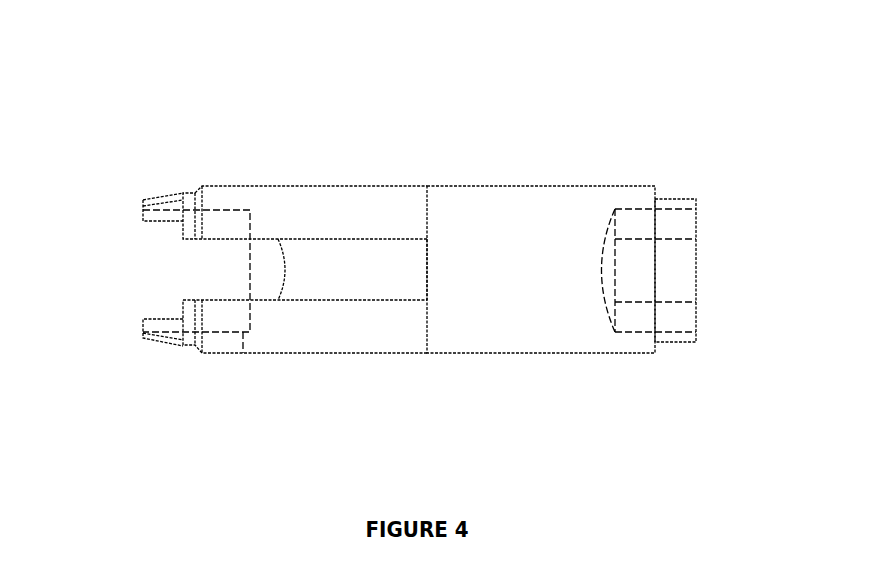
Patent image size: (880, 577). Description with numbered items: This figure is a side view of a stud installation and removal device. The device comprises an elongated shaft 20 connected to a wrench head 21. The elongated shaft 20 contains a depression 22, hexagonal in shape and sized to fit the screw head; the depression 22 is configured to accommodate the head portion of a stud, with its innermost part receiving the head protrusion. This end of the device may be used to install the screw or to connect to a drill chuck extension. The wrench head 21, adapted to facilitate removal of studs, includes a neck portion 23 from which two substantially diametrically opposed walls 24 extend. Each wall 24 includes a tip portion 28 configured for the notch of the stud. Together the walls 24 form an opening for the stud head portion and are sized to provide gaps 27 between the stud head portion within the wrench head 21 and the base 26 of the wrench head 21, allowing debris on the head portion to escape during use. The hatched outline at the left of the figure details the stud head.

The elongated shaft 20 is at (547, 230).
The wrench head 21 is at (347, 272).
The depression 22 is at (680, 285).
The neck portion 23 is at (385, 230).
The walls 24 is at (225, 195).
The base 26 is at (273, 272).
The gaps 27 is at (228, 285).
The tip portion 28 is at (157, 212).